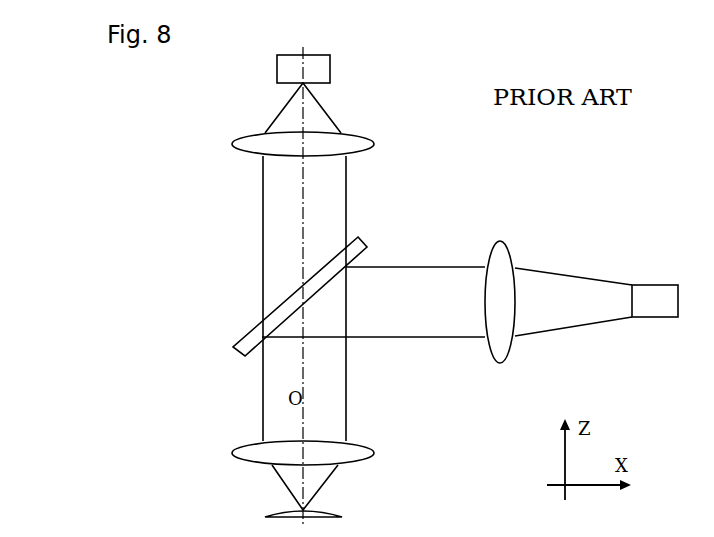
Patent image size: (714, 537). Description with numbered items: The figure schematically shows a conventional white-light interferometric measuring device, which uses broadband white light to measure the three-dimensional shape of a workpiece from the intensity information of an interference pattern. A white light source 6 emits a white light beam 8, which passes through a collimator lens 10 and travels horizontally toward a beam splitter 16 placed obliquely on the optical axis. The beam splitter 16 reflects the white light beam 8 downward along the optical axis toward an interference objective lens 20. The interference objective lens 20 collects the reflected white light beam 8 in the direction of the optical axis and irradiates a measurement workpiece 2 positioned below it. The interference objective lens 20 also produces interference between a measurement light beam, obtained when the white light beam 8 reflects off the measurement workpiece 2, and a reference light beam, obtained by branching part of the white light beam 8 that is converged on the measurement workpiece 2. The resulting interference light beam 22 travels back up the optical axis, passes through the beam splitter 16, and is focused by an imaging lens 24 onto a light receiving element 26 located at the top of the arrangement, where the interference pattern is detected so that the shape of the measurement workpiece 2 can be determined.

The measurement workpiece 2 is at (322, 510).
The white light source 6 is at (648, 287).
The white light beam 8 is at (550, 330).
The collimator lens 10 is at (505, 243).
The beam splitter 16 is at (363, 246).
The interference objective lens 20 is at (365, 455).
The interference light beam 22 is at (344, 188).
The imaging lens 24 is at (362, 146).
The light receiving element 26 is at (322, 70).